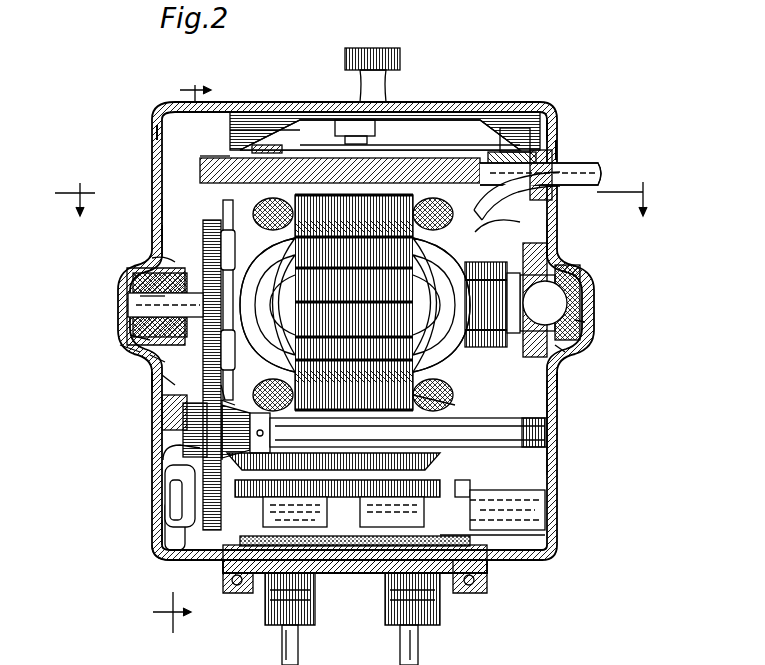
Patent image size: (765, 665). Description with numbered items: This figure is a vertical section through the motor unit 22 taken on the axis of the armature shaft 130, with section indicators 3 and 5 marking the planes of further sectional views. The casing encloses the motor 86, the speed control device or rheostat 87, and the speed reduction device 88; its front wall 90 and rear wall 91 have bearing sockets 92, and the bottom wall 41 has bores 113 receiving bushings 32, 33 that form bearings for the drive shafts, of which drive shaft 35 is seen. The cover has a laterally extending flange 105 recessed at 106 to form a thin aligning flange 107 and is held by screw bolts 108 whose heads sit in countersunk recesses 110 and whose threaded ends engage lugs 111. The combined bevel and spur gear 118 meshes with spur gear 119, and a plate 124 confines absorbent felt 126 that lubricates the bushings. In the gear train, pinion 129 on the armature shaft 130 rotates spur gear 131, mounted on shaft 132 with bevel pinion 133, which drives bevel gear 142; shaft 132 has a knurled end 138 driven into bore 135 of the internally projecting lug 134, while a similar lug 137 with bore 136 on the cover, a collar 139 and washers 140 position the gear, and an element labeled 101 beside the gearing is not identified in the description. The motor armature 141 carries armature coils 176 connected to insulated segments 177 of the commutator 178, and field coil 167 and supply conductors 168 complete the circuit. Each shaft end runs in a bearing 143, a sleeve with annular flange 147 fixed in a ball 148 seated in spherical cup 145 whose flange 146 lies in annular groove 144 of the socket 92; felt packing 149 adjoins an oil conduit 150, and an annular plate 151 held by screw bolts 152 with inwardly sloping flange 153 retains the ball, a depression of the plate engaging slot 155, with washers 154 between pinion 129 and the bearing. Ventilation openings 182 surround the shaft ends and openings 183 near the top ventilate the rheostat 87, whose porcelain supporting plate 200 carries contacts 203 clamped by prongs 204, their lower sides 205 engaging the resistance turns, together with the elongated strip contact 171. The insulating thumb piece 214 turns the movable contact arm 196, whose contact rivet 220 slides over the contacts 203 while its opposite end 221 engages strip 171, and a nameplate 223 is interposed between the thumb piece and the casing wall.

The section line 3- 3 is at (354, 199).
The section line 5- 5 is at (182, 358).
The motor unit 22 is at (162, 105).
The bushing 32 is at (318, 595).
The bushing 33 is at (437, 585).
The drive shaft 35 is at (420, 652).
The bottom wall 41 is at (500, 565).
The motor 86 is at (459, 360).
The speed control device 87 is at (395, 137).
The speed reduction device 88 is at (200, 575).
The front wall 90 is at (157, 172).
The rear wall 91 is at (555, 392).
The bearing socket 92 is at (140, 370).
The gear housing 101 is at (200, 412).
The flange 105 is at (165, 560).
The recess 106 is at (215, 585).
The aligning flange 107 is at (195, 562).
The screw bolt 108 is at (600, 173).
The countersunk recess 110 is at (555, 132).
The lug 111 is at (545, 510).
The bore 113 is at (258, 590).
The combined bevel and spur gear 118 is at (345, 490).
The spur gear 119 is at (462, 492).
The plate 124 is at (520, 535).
The absorbent felt 126 is at (540, 547).
The pinion 129 is at (208, 268).
The armature shaft 130 is at (147, 300).
The spur gear 131 is at (200, 483).
The shaft 132 is at (510, 450).
The bevel pinion 133 is at (190, 500).
The lug 134 is at (550, 412).
The bore 135 is at (540, 470).
The bore 136 is at (183, 440).
The lug 137 is at (183, 418).
The knurled end 138 is at (545, 445).
The collar 139 is at (218, 404).
The washers 140 is at (190, 470).
The motor armature 141 is at (500, 288).
The bevel gear 142 is at (378, 490).
The bearing 143 is at (135, 300).
The annular groove 144 is at (152, 262).
The sheet metal member 145 is at (155, 362).
The flange 146 is at (160, 380).
The annular flange 147 is at (140, 335).
The ball 148 is at (130, 275).
The felt packing 149 is at (572, 272).
The oil conduit 150 is at (130, 355).
The annular plate 151 is at (158, 225).
The screw bolts 152 is at (160, 245).
The inwardly sloping flange 153 is at (212, 392).
The washers 154 is at (223, 285).
The slot 155 is at (120, 292).
The coil 167 is at (457, 407).
The supply conductors 168 is at (600, 170).
The elongated metal strip 171 is at (255, 152).
The armature coils 176 is at (458, 345).
The insulated segments 177 is at (512, 275).
The commutator 178 is at (540, 247).
The ventilation openings 182 is at (160, 210).
The ventilation openings 183 is at (157, 128).
The movable contact 196 is at (445, 142).
The porcelain supporting plate 200 is at (200, 158).
The rheostat contacts 203 is at (524, 126).
The prongs 204 is at (558, 138).
The lower sides 205 is at (535, 140).
The thumb piece 214 is at (372, 50).
The contact rivet 220 is at (482, 150).
The opposite end 221 is at (256, 146).
The nameplate 223 is at (292, 102).